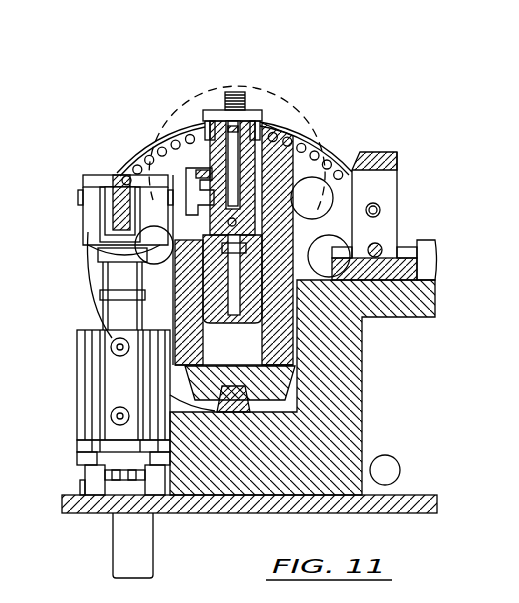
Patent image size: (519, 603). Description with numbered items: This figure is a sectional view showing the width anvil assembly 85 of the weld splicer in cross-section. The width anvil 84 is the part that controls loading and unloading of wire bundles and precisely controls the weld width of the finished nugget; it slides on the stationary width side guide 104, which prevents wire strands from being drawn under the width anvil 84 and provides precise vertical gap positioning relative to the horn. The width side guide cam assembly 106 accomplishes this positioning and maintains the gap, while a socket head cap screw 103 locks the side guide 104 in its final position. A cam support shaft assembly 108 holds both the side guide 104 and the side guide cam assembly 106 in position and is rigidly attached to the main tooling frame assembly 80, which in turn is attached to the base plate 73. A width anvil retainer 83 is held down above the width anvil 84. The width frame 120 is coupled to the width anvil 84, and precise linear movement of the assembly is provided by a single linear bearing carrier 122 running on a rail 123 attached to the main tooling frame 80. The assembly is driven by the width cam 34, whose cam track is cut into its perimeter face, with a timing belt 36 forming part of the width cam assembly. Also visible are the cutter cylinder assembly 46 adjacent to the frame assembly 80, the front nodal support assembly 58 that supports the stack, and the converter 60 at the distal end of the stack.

The width cam 34 is at (312, 162).
The timing belt 36 is at (333, 162).
The cutter cylinder assembly 46 is at (77, 371).
The front nodal support assembly 58 is at (395, 153).
The converter 60 is at (150, 207).
The base plate 73 is at (72, 500).
The main tooling frame assembly 80 is at (180, 298).
The width anvil retainer 83 is at (247, 98).
The width anvil 84 is at (212, 140).
The width anvil assembly 85 is at (224, 74).
The socket head cap screw 103 is at (205, 212).
The width side guide 104 is at (218, 142).
The width side guide cam assembly 106 is at (205, 166).
The cam support shaft assembly 108 is at (282, 200).
The width frame 120 is at (265, 343).
The linear bearing carrier 122 is at (270, 381).
The rail 123 is at (252, 402).